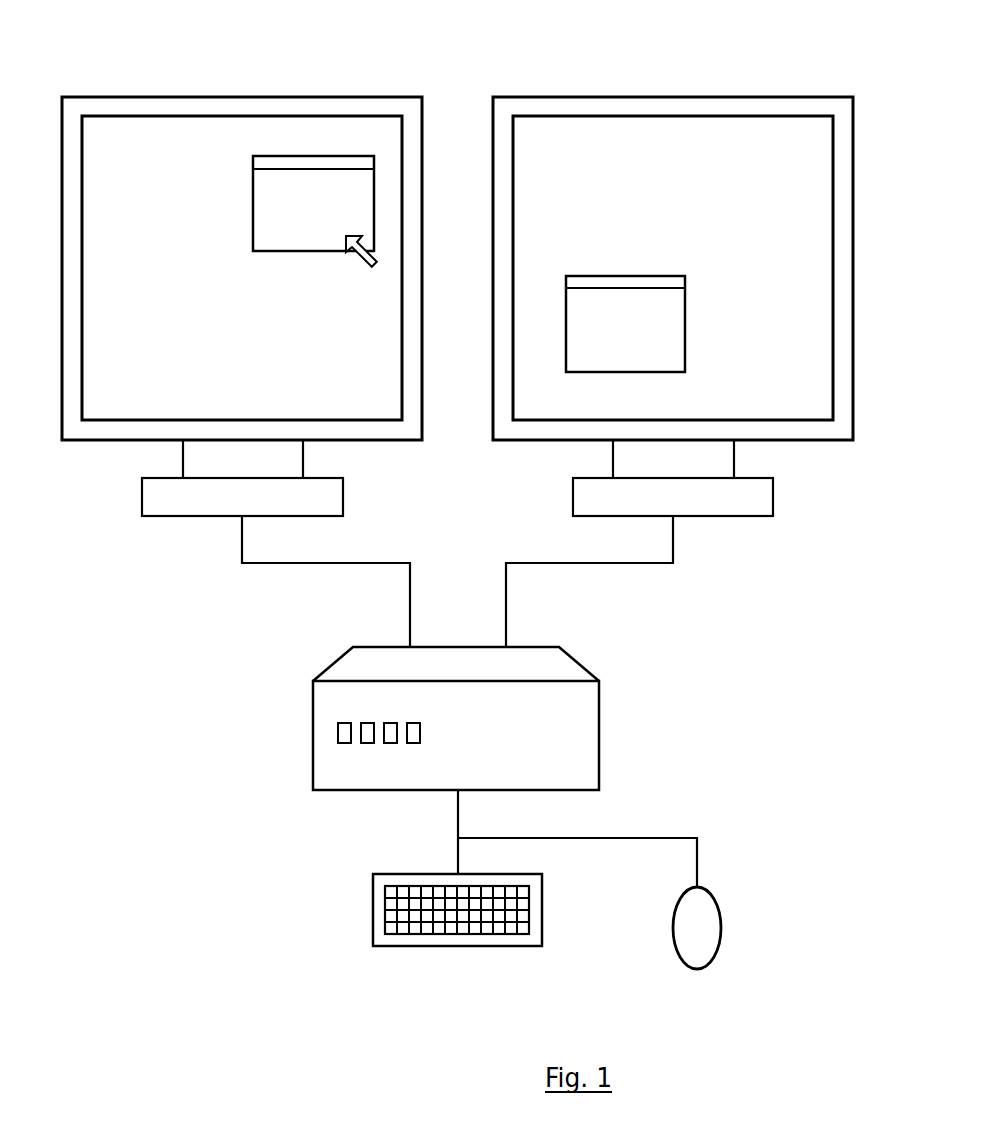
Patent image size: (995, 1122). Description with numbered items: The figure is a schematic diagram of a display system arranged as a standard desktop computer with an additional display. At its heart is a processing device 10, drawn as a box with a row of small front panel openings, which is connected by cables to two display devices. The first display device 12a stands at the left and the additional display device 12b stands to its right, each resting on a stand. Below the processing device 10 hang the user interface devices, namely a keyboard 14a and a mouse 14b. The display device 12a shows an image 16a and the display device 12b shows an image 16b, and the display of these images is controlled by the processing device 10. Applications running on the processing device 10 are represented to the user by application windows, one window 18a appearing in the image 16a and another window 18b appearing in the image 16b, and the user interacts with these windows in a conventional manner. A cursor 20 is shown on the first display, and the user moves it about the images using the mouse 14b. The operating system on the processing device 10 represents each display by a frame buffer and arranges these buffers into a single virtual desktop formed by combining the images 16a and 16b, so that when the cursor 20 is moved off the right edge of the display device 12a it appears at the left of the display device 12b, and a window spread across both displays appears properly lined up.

The processing device 10 is at (313, 766).
The display device 12a is at (219, 97).
The additional display device 12b is at (719, 97).
The keyboard 14a is at (373, 922).
The mouse 14b is at (721, 909).
The image 16a is at (140, 392).
The image 16b is at (619, 144).
The application window 18a is at (253, 208).
The application window 18b is at (685, 324).
The cursor 20 is at (372, 252).